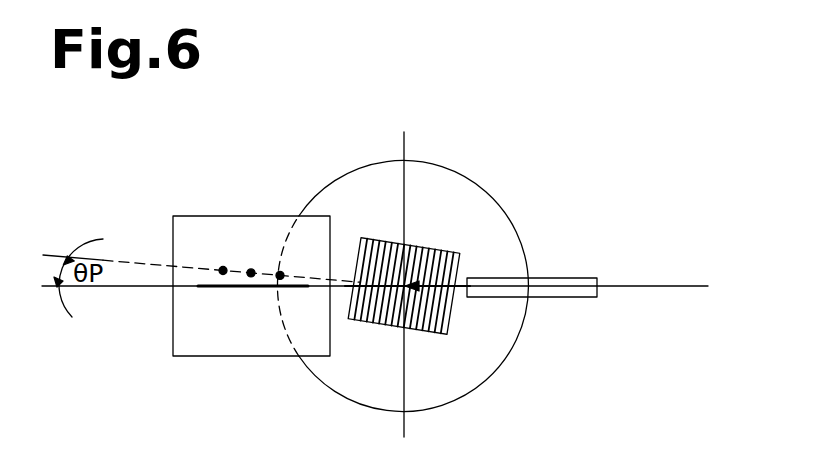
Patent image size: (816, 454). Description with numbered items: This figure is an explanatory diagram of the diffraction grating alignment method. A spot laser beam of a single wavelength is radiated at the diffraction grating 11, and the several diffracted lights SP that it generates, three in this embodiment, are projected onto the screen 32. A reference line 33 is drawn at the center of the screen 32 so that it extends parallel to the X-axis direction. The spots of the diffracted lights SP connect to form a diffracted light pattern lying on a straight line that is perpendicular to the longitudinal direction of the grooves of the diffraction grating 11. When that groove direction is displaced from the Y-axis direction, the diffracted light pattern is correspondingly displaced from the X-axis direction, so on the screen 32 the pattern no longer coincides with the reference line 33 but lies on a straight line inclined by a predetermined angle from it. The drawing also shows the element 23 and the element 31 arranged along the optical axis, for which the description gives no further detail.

The diffraction grating 11 is at (437, 247).
The rotation circle of grating 23 is at (348, 178).
The light source / collimator 31 is at (568, 277).
The screen 32 is at (203, 215).
The reference line 33 is at (203, 284).
The diffracted lights SP is at (280, 273).